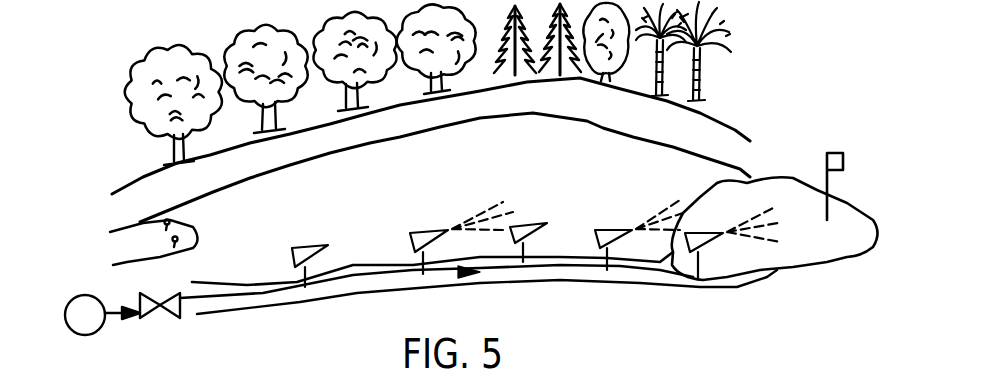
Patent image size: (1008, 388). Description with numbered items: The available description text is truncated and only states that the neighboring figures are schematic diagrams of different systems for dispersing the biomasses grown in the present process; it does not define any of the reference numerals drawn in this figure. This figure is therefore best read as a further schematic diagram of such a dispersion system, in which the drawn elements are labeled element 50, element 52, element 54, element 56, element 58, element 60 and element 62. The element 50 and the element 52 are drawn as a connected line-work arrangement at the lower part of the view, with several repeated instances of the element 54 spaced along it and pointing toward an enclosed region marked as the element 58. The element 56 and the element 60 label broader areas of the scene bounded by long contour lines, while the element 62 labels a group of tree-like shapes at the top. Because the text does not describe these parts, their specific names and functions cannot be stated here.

The supply pipe 50 is at (346, 307).
The lateral irrigation pipe 52 is at (573, 265).
The sprinkler heads 54 is at (427, 230).
The fairway 56 is at (523, 161).
The green 58 is at (823, 237).
The hill 60 is at (678, 122).
The trees 62 is at (648, 79).